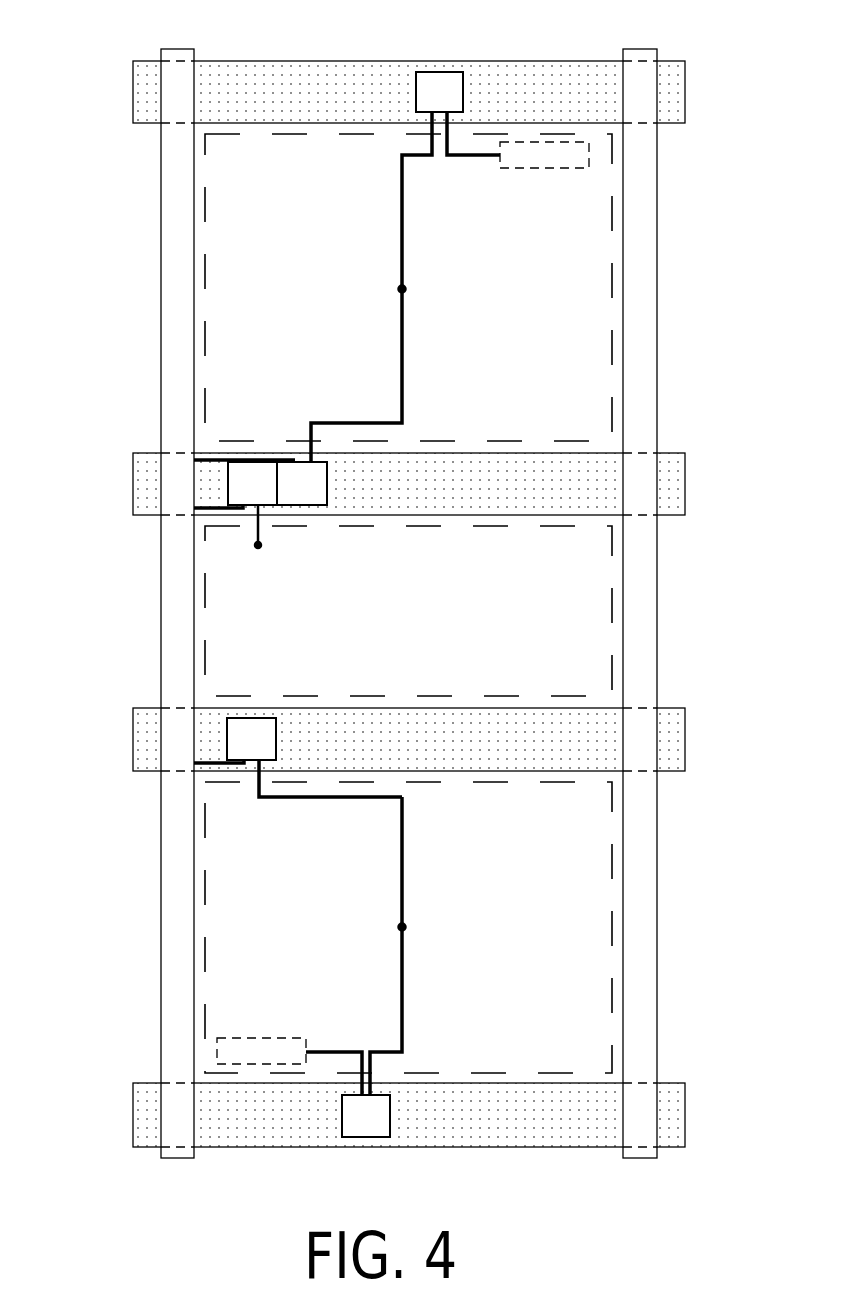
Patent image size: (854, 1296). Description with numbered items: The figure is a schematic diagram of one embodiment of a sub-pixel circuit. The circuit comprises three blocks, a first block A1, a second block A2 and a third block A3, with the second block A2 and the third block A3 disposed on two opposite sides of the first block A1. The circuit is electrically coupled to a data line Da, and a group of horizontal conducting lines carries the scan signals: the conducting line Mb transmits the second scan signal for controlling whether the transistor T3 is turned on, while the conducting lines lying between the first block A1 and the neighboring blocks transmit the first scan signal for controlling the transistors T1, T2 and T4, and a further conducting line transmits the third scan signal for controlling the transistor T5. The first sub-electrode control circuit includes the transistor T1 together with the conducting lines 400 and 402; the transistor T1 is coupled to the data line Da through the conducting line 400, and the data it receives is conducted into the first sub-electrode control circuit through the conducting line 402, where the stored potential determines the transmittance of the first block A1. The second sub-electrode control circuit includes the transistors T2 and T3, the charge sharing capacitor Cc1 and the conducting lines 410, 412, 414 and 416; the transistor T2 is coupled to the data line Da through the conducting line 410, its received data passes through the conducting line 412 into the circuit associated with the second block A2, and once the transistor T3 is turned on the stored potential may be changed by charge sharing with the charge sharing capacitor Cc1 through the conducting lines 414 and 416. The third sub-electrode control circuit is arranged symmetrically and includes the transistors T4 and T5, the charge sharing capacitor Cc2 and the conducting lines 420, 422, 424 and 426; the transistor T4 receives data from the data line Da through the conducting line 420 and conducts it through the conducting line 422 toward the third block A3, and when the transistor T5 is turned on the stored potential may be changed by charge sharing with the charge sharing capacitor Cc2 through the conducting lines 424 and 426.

The conducting line 400 is at (215, 512).
The conducting line 402 is at (258, 537).
The conducting line 410 is at (240, 458).
The conducting line 412 is at (403, 363).
The conducting line 414 is at (403, 231).
The conducting line 416 is at (467, 158).
The conducting line 420 is at (213, 765).
The conducting line 422 is at (320, 797).
The conducting line 424 is at (405, 970).
The conducting line 426 is at (331, 1050).
The data line Da is at (408, 580).
The conducting line Mb is at (385, 92).
The first block A1 is at (612, 608).
The second block A2 is at (612, 290).
The third block A3 is at (612, 925).
The charge sharing capacitor Cc1 is at (590, 152).
The charge sharing capacitor Cc2 is at (207, 1043).
The transistor T1 is at (252, 483).
The transistor T2 is at (302, 483).
The transistor T3 is at (439, 91).
The transistor T4 is at (251, 738).
The transistor T5 is at (366, 1115).